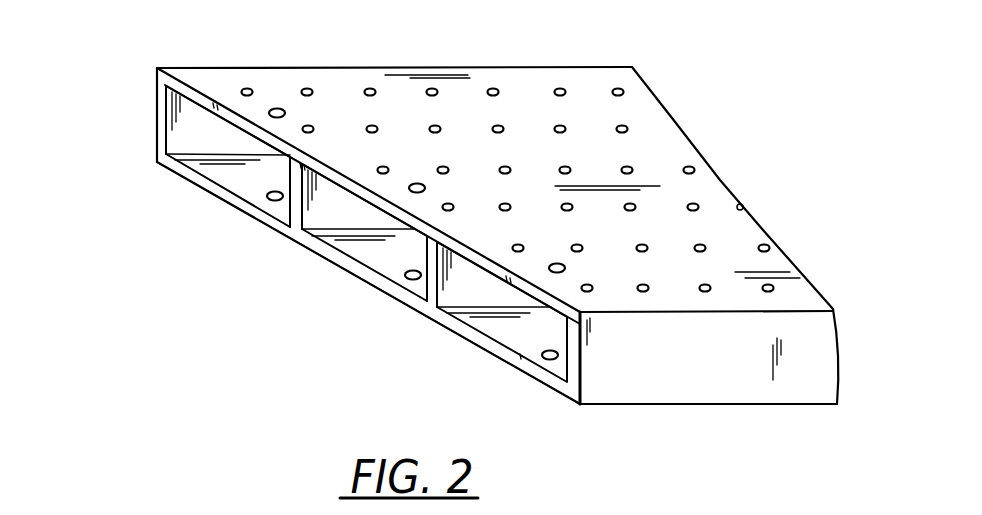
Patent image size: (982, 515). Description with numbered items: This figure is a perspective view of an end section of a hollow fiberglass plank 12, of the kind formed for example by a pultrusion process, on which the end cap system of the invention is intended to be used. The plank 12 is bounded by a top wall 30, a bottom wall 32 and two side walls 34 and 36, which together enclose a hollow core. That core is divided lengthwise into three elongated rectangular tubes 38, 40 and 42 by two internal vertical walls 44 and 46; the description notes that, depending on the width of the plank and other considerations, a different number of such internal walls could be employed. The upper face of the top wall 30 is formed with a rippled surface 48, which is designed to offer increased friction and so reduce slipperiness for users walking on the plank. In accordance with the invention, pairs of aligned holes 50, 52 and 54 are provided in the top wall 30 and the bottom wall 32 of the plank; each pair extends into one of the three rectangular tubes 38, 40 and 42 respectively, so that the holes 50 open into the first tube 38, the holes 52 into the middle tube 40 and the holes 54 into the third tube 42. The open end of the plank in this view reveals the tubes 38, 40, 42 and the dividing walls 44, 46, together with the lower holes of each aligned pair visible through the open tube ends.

The hollow fiberglass plank 12 is at (550, 67).
The top wall 30 is at (655, 112).
The bottom wall 32 is at (508, 363).
The side wall 34 is at (157, 123).
The side wall 36 is at (777, 372).
The elongated rectangular tube 38 is at (214, 173).
The elongated rectangular tube 40 is at (356, 251).
The elongated rectangular tube 42 is at (500, 327).
The internal vertical wall 44 is at (290, 217).
The internal vertical wall 46 is at (427, 297).
The rippled surface 48 is at (693, 207).
The aligned holes 50 is at (274, 110).
The aligned holes 52 is at (417, 185).
The aligned holes 54 is at (553, 265).